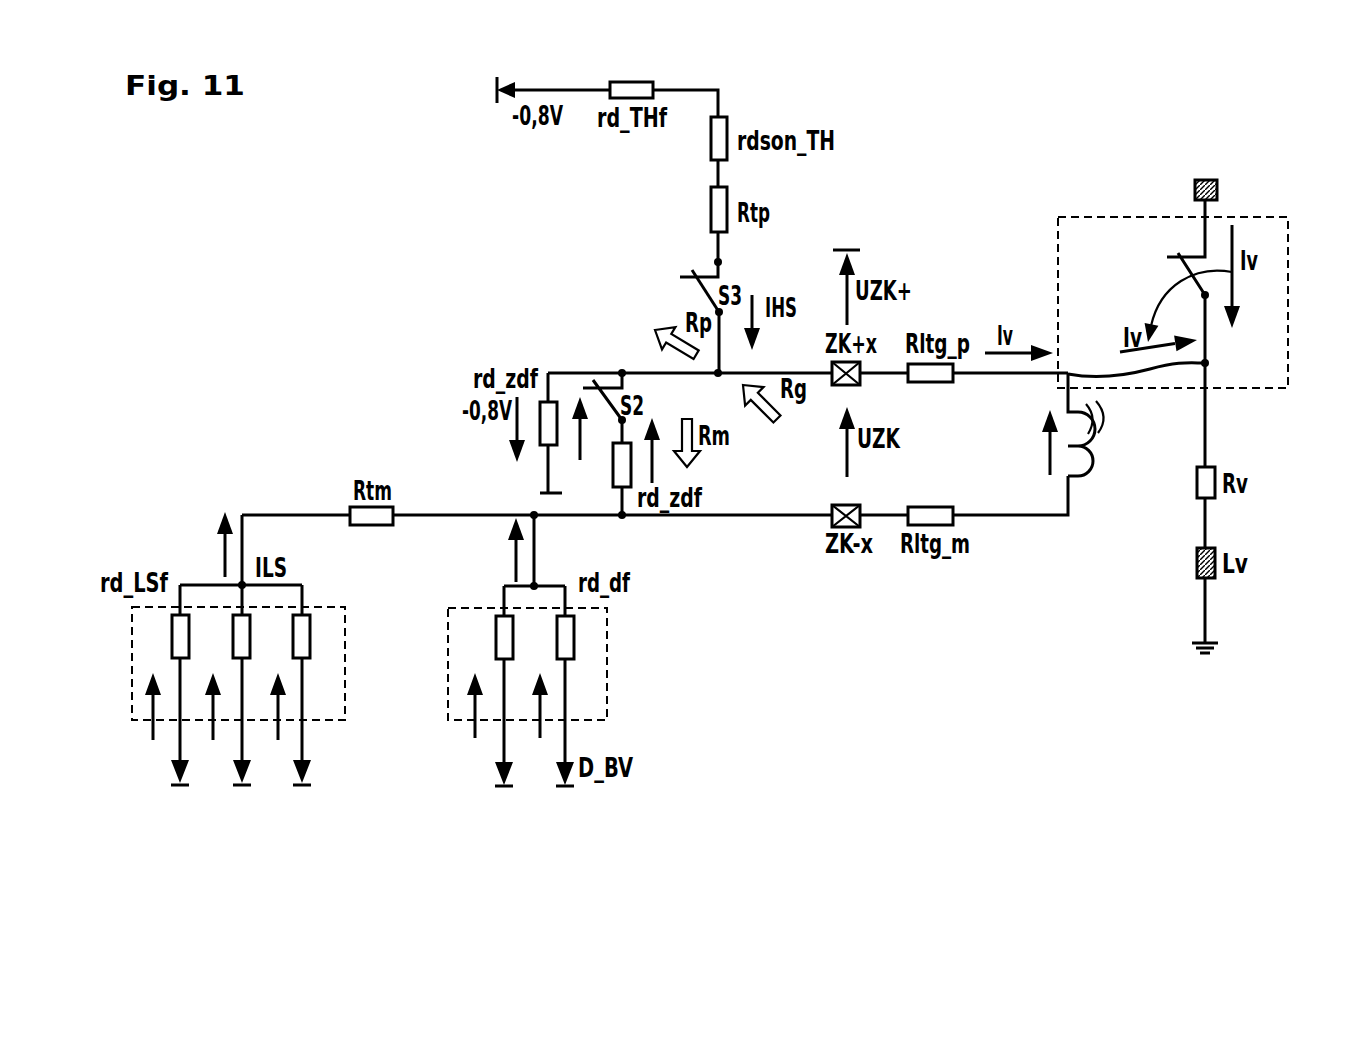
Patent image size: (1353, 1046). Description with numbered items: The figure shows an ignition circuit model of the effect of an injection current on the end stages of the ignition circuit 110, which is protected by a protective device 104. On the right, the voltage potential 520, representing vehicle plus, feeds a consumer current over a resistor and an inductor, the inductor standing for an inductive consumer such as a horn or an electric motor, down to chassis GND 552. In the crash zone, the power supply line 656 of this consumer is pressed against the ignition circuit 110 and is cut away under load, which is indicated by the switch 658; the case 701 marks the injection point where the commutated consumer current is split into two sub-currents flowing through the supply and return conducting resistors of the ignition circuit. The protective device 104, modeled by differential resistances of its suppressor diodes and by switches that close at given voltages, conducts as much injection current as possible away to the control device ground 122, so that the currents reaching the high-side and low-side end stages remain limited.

The control device ground 122 is at (497, 103).
The protective device 104 is at (540, 493).
The case 701 is at (1079, 158).
The voltage potential 520 is at (1205, 180).
The switch 658 is at (1180, 272).
The power supply line 656 is at (1205, 427).
The ignition circuit 110 is at (1093, 460).
The chassis GND 552 is at (1205, 656).